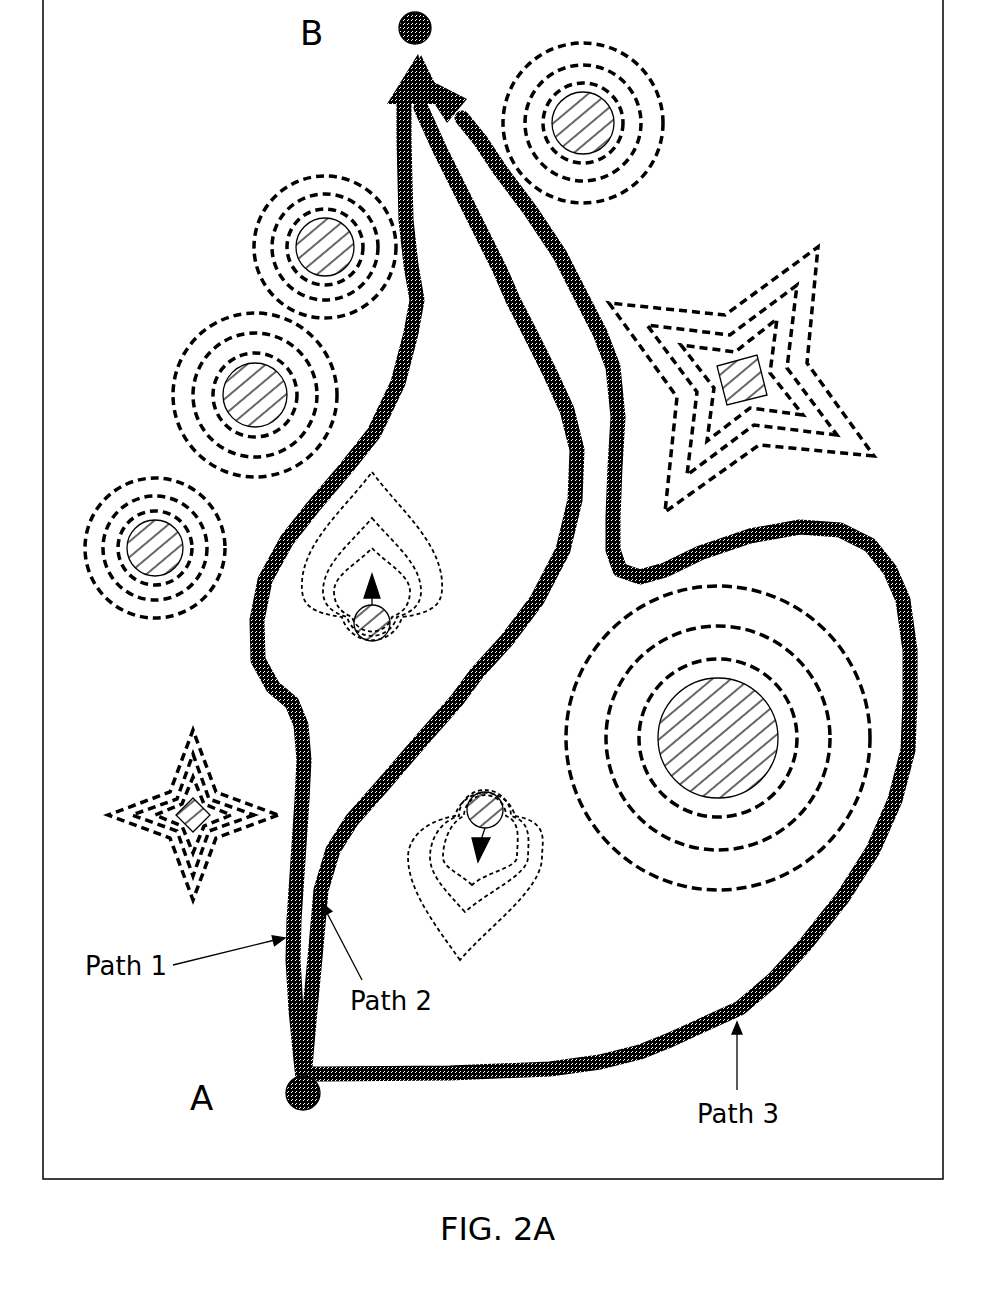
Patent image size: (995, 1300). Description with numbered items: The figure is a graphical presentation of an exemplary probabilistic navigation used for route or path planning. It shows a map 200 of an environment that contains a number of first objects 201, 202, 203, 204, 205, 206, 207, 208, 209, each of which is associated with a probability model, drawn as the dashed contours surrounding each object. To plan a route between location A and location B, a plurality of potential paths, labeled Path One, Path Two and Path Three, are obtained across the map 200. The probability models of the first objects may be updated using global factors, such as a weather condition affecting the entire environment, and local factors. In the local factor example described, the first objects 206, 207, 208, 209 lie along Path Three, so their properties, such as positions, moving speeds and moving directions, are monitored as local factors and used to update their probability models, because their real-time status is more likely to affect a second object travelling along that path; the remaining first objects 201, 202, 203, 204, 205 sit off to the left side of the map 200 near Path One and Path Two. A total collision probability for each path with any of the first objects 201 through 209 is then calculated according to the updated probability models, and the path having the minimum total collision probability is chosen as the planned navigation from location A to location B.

The map 200 is at (168, 39).
The first object 201 is at (287, 247).
The first object 202 is at (225, 395).
The first object 203 is at (141, 543).
The first object 204 is at (372, 584).
The first object 205 is at (190, 815).
The first object 206 is at (619, 123).
The first object 207 is at (741, 379).
The first object 208 is at (719, 738).
The first object 209 is at (495, 883).